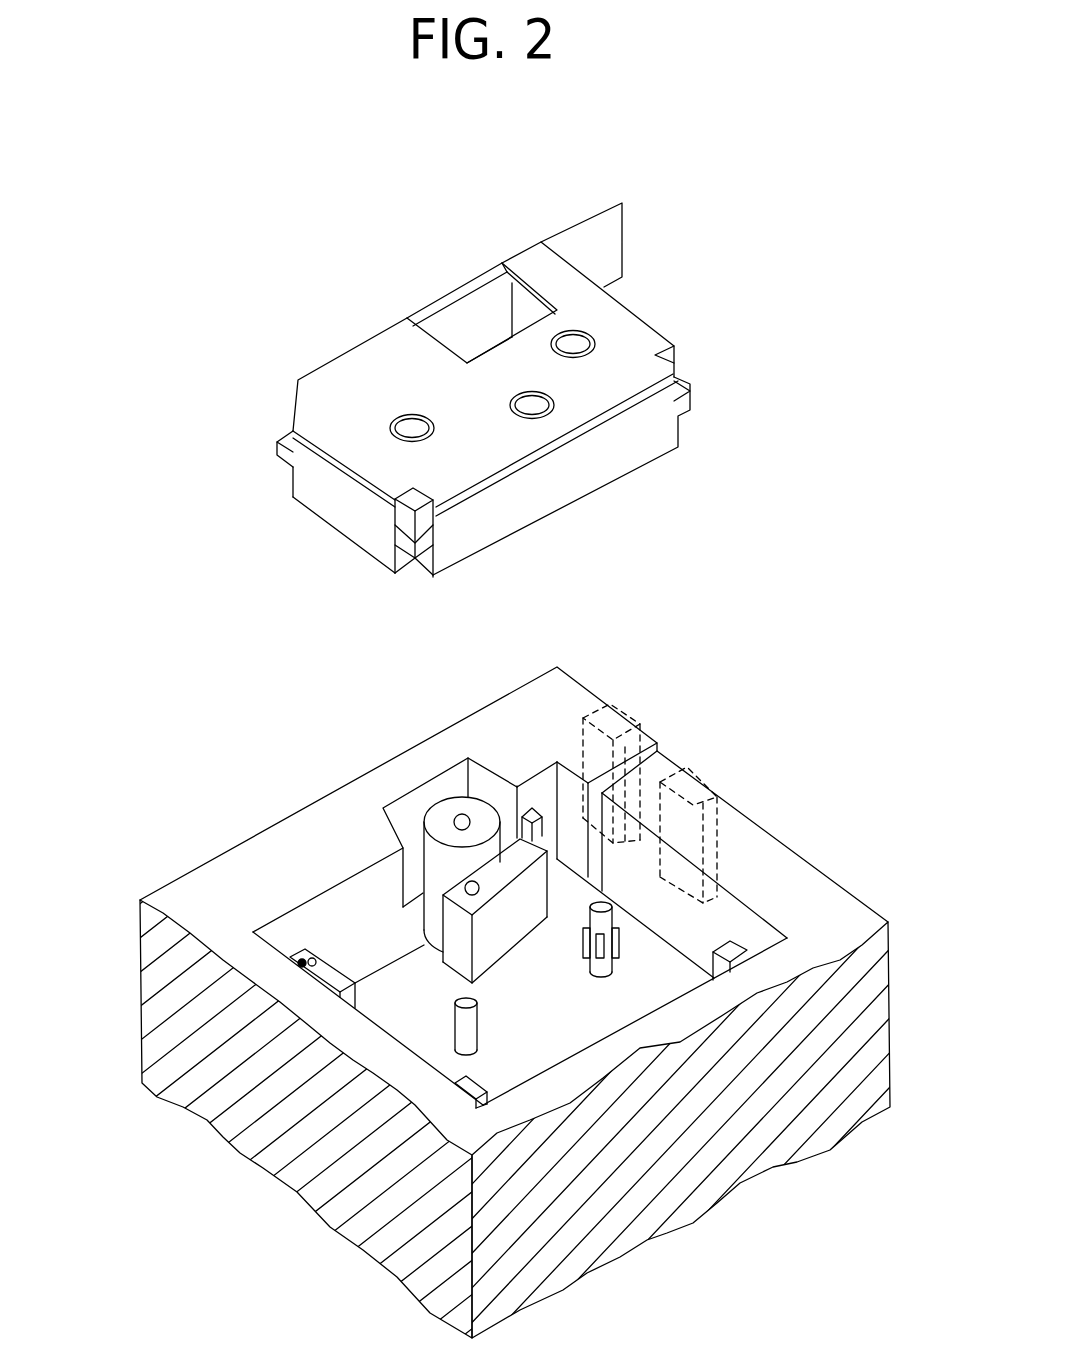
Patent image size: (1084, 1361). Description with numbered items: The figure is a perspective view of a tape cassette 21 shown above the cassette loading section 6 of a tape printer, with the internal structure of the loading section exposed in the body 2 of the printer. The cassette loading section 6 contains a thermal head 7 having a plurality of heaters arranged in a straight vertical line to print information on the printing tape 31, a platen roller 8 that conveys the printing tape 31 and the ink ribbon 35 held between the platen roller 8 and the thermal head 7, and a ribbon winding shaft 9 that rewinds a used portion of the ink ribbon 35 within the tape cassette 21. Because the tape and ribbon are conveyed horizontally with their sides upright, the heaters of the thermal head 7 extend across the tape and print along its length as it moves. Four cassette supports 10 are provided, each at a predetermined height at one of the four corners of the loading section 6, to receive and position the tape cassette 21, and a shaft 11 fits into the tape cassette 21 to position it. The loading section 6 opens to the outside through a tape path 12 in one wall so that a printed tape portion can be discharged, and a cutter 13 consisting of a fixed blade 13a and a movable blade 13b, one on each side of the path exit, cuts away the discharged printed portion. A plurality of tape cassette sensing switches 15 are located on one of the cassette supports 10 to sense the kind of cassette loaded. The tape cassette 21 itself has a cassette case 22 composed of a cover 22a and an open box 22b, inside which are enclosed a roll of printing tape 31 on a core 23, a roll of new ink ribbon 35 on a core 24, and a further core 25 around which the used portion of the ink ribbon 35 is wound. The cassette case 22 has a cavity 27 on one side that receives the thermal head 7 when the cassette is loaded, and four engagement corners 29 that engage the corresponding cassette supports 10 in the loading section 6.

The body 2 is at (525, 929).
The cassette loading section 6 is at (627, 1013).
The thermal head 7 is at (510, 940).
The platen roller 8 is at (448, 813).
The ribbon winding shaft 9 is at (597, 918).
The cassette support 10 is at (330, 970).
The shaft 11 is at (455, 1018).
The tape path 12 is at (665, 755).
The cutter 13 is at (624, 777).
The fixed blade 13a is at (623, 708).
The movable blade 13b is at (720, 787).
The tape cassette sensing switch 15 is at (312, 958).
The tape cassette 21 is at (516, 394).
The cassette case 22 is at (516, 394).
The cover 22a is at (663, 337).
The open box 22b is at (628, 459).
The core 23 is at (412, 418).
The core 24 is at (510, 406).
The core 25 is at (575, 354).
The cavity 27 is at (477, 318).
The engagement corner 29 is at (415, 528).
The printing tape 31 is at (612, 243).
The ink ribbon 35 is at (443, 327).